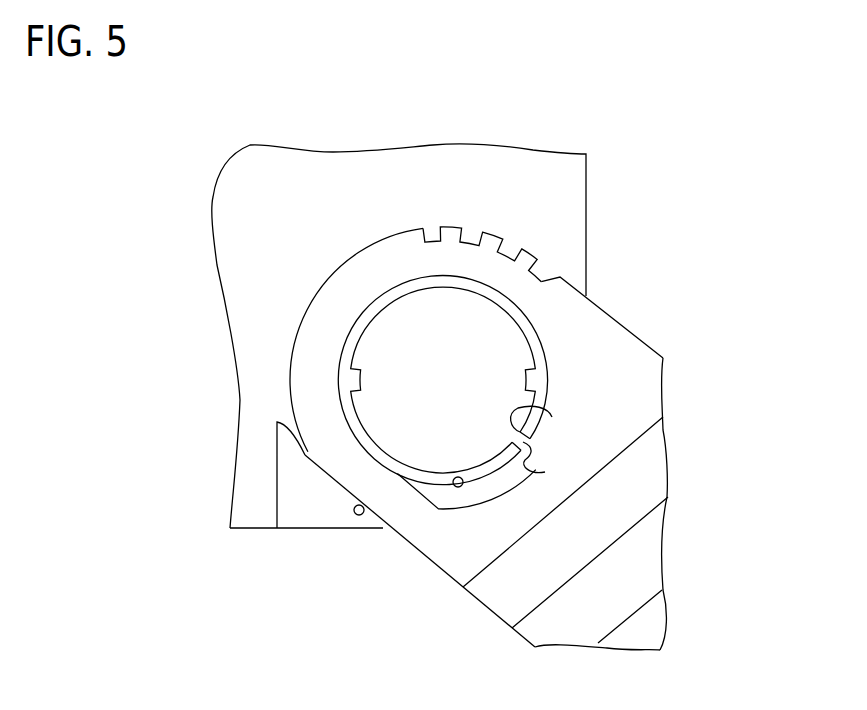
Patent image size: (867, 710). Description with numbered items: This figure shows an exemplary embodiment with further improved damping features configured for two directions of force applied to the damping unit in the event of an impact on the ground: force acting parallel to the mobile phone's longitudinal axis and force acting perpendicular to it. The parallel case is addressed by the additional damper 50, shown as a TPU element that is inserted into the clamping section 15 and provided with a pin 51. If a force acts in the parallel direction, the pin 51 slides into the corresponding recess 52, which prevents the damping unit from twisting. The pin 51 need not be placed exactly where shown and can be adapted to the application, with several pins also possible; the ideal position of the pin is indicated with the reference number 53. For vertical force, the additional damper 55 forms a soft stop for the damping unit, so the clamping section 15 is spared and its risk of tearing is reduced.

The clamping section 15 is at (535, 297).
The additional damper 50 is at (572, 360).
The pin 51 is at (550, 452).
The recess 52 is at (547, 408).
The ideal position of the pin 53 is at (458, 488).
The additional damper 55 is at (310, 510).